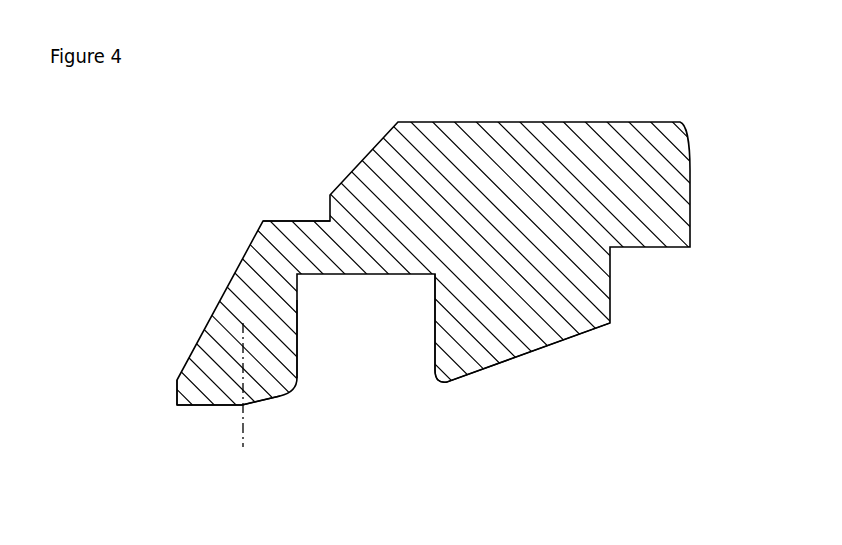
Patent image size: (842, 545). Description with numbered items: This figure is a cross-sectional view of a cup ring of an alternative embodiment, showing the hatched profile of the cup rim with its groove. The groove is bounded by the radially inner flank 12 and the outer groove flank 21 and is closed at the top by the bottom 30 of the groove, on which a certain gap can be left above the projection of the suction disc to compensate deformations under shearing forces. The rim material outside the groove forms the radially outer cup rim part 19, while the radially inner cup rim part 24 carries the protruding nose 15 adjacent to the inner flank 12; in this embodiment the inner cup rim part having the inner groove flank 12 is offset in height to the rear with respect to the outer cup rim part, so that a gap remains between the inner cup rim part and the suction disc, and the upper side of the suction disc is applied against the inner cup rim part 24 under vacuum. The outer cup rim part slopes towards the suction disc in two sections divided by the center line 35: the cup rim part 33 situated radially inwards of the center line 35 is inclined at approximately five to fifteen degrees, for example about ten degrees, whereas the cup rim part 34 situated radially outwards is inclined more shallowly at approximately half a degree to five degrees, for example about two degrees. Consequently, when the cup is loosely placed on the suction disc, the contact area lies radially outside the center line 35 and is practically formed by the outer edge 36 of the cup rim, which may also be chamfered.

The bottom of the groove 30 is at (360, 275).
The outer groove flank 21 is at (298, 316).
The center line 35 is at (240, 330).
The radially outer cup rim part 19 is at (237, 397).
The outer edge of the cup rim 36 is at (178, 407).
The cup rim part radially outwards of the center line 34 is at (209, 405).
The cup rim part radially inwards of the center line 33 is at (270, 395).
The radially inner flank of the groove 12 is at (432, 313).
The nose 15 is at (450, 378).
The radially inner cup rim part 24 is at (540, 348).